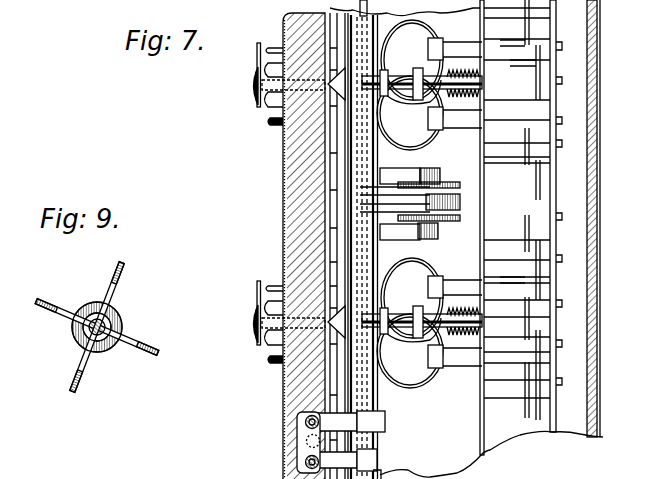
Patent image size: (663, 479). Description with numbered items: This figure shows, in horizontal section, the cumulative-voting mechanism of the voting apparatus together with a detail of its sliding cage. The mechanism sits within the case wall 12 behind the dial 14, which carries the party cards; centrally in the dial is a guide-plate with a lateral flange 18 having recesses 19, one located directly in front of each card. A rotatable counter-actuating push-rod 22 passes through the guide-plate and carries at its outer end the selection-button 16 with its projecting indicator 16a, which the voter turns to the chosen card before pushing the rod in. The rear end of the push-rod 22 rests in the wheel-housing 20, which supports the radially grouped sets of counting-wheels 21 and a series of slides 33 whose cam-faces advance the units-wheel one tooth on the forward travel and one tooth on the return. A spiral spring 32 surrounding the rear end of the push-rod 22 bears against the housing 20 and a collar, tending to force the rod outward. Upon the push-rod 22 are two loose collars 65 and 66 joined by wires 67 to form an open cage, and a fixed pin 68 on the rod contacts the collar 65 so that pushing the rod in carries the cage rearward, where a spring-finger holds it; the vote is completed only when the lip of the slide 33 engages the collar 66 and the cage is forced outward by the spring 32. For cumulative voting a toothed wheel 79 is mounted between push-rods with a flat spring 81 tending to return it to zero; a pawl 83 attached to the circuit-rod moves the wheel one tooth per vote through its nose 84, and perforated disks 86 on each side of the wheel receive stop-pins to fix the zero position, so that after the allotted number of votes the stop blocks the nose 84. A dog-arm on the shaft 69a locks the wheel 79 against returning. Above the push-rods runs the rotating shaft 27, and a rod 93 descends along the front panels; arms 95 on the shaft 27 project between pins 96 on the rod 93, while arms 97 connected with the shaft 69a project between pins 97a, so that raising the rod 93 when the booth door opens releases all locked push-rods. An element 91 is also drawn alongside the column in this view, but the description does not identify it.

In FIG. 7, the case wall 12 is at (601, 219).
In FIG. 7, the dial 14 is at (290, 22).
In FIG. 7, the selection-button 16 is at (253, 86).
In FIG. 7, the projecting indicator 16a is at (257, 50).
In FIG. 7, the lateral flange 18 is at (276, 129).
In FIG. 7, the recesses 19 is at (267, 120).
In FIG. 7, the wheel-housing 20 is at (521, 227).
In FIG. 7, the counting-wheels 21 is at (520, 211).
In FIG. 7, the push-rod 22 is at (400, 78).
In FIG. 9, the push-rod 22 is at (110, 350).
In FIG. 7, the rotating shaft 27 is at (380, 397).
In FIG. 7, the spiral spring 32 is at (455, 96).
In FIG. 7, the slides 33 is at (462, 38).
In FIG. 7, the loose collar 65 is at (392, 340).
In FIG. 9, the loose collar 65 is at (118, 320).
In FIG. 7, the loose collar 66 is at (432, 308).
In FIG. 9, the loose collar 66 is at (115, 330).
In FIG. 7, the wires 67 is at (410, 204).
In FIG. 9, the wires 67 is at (124, 275).
In FIG. 9, the fixed pin 68 is at (92, 315).
In FIG. 7, the shaft 69a is at (380, 476).
In FIG. 7, the toothed wheel 79 is at (460, 201).
In FIG. 7, the flat spring 81 is at (403, 176).
In FIG. 7, the pawl 83 is at (396, 232).
In FIG. 7, the nose 84 is at (424, 238).
In FIG. 7, the disks 86 is at (446, 184).
In FIG. 7, the inner rod 91 is at (357, 128).
In FIG. 7, the rod 93 is at (300, 443).
In FIG. 7, the arms 95 is at (344, 421).
In FIG. 7, the pins 96 is at (296, 425).
In FIG. 7, the arms 97 is at (340, 460).
In FIG. 7, the pins 97a is at (296, 466).